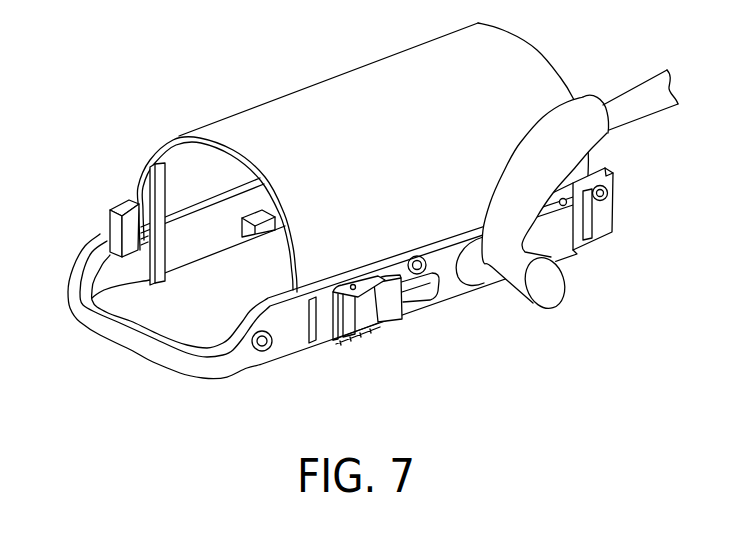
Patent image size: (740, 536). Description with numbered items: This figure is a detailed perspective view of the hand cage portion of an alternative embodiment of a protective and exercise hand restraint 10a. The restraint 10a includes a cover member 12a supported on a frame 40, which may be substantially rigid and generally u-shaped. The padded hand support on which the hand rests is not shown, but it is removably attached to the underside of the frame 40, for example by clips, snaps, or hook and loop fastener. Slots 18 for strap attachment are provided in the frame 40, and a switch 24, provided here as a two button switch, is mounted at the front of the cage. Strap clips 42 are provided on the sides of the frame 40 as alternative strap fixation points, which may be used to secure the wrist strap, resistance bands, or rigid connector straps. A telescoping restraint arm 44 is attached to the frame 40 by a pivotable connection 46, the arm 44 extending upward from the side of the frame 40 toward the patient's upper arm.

The restraint 10a is at (126, 98).
The cover member 12a is at (230, 132).
The slots 18 is at (250, 236).
The switch 24 is at (110, 220).
The frame 40 is at (117, 337).
The strap clips 42 is at (347, 341).
The telescoping restraint arm 44 is at (656, 63).
The pivotable connection 46 is at (487, 280).